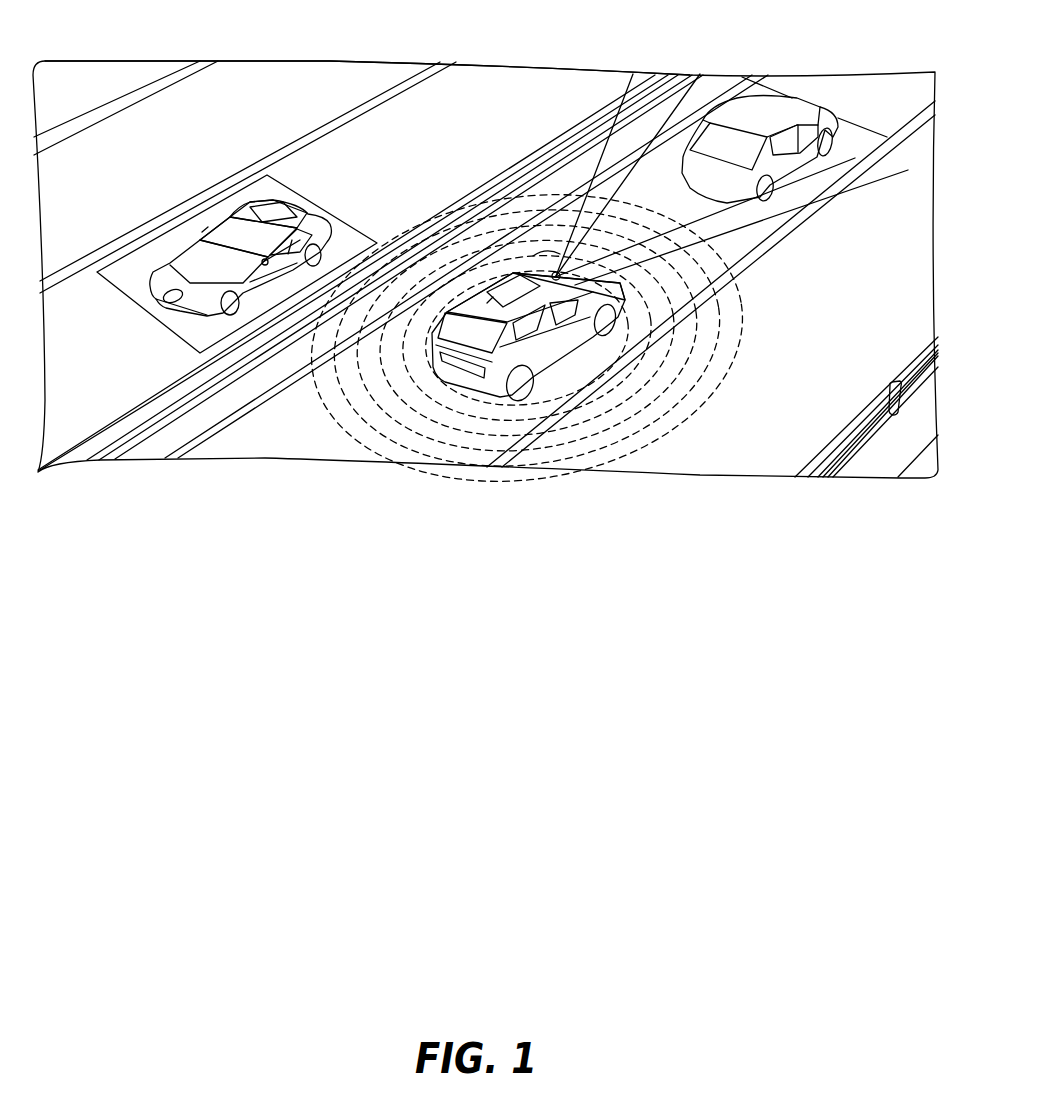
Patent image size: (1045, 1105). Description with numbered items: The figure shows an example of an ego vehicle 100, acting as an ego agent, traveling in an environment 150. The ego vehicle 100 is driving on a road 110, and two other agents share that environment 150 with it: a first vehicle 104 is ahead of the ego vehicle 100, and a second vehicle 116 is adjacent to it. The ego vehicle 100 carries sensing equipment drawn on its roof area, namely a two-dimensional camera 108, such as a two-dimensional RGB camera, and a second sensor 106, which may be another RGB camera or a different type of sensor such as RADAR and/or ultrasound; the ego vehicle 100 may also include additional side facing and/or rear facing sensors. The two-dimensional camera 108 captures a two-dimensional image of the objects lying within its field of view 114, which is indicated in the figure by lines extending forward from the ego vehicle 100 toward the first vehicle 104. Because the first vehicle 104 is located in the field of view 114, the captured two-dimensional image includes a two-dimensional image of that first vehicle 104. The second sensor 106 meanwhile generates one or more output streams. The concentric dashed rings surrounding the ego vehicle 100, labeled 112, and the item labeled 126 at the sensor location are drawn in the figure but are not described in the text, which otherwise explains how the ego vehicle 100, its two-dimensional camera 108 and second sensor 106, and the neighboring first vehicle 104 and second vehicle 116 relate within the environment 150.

The ego vehicle 100 is at (562, 297).
The first vehicle 104 is at (787, 103).
The second sensor 106 is at (497, 300).
The 2D camera 108 is at (550, 265).
The road 110 is at (880, 293).
The sensor detection range 112 is at (707, 432).
The field of view 114 is at (643, 183).
The second vehicle 116 is at (312, 220).
The sensor 126 is at (556, 272).
The environment 150 is at (405, 63).